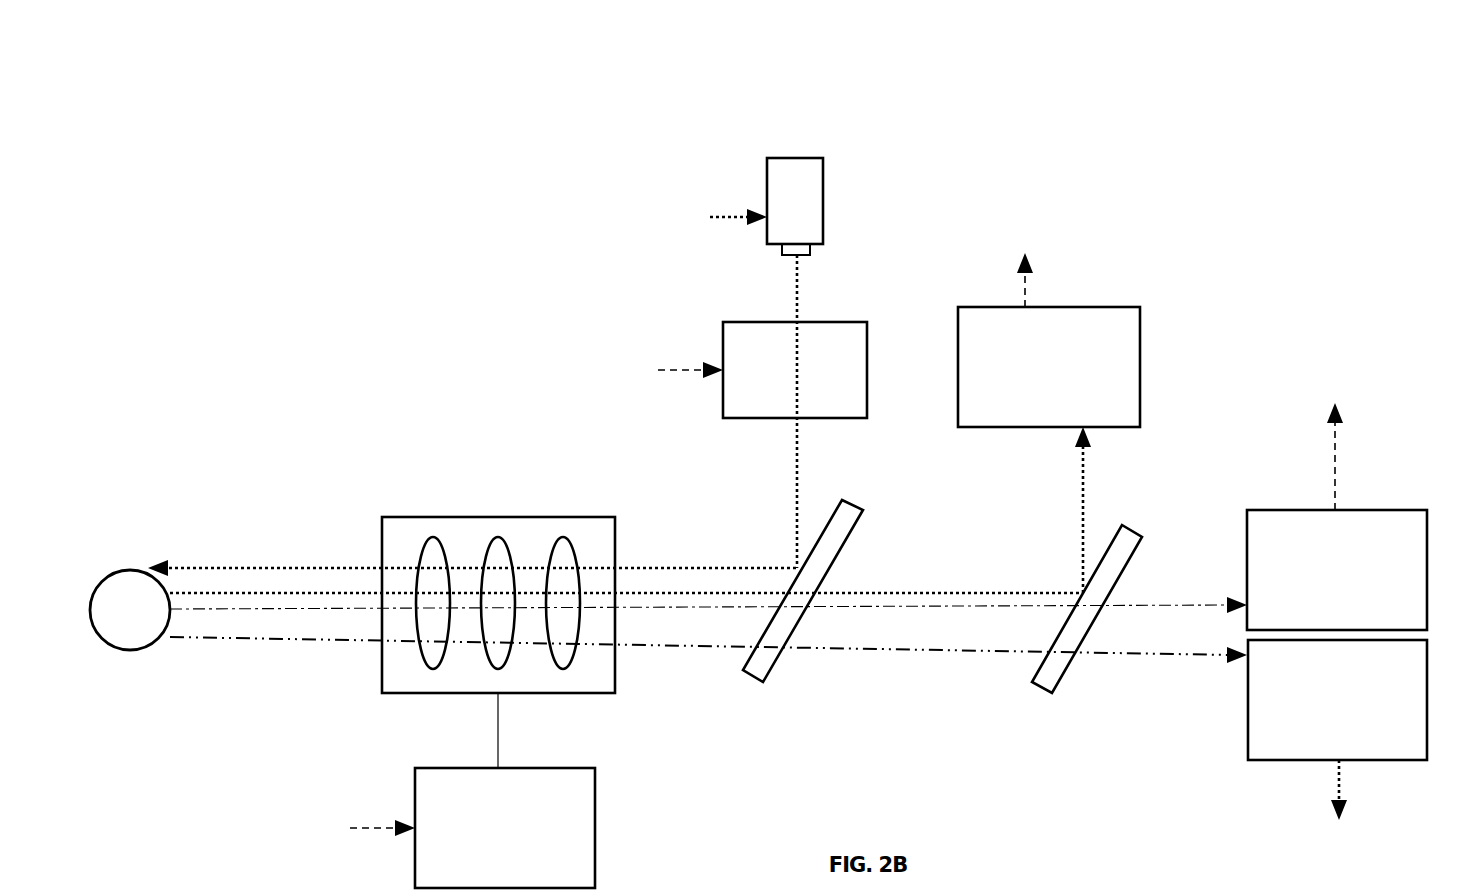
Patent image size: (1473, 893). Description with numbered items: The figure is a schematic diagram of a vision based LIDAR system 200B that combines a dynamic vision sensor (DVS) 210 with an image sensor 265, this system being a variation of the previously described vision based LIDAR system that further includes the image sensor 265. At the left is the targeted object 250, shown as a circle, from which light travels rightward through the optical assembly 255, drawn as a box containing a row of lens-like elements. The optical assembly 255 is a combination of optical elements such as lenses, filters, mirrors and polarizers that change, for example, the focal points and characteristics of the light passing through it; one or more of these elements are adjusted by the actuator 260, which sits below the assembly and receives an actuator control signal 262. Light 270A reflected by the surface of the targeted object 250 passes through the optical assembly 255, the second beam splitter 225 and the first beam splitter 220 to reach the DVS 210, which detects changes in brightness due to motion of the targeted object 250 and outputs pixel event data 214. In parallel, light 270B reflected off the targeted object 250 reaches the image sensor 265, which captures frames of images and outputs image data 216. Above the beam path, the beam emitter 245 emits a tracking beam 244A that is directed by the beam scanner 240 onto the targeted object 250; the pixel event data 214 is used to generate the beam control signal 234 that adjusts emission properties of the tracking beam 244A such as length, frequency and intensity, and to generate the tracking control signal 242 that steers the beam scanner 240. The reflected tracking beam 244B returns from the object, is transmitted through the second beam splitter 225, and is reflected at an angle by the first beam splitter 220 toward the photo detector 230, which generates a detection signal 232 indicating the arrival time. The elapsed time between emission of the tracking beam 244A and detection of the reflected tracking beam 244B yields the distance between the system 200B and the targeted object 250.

The vision based LIDAR system 200B is at (218, 59).
The dynamic vision sensor (DVS) 210 is at (1318, 614).
The pixel event data 214 is at (1337, 490).
The image data 216 is at (1332, 777).
The first beam splitter 220 is at (1127, 528).
The second beam splitter 225 is at (842, 500).
The photo detector 230 is at (1030, 396).
The detection signal 232 is at (1028, 280).
The beam control signal 234 is at (723, 215).
The beam scanner 240 is at (828, 322).
The tracking control signal 242 is at (687, 370).
The tracking beam 244A is at (233, 567).
The reflected tracking beam 244B is at (1083, 482).
The beam emitter 245 is at (823, 196).
The targeted object 250 is at (131, 568).
The optical assembly 255 is at (412, 517).
The actuator 260 is at (486, 852).
The actuator control signal 262 is at (375, 827).
The image sensor 265 is at (1318, 727).
The light 270A is at (232, 609).
The light 270B is at (858, 648).